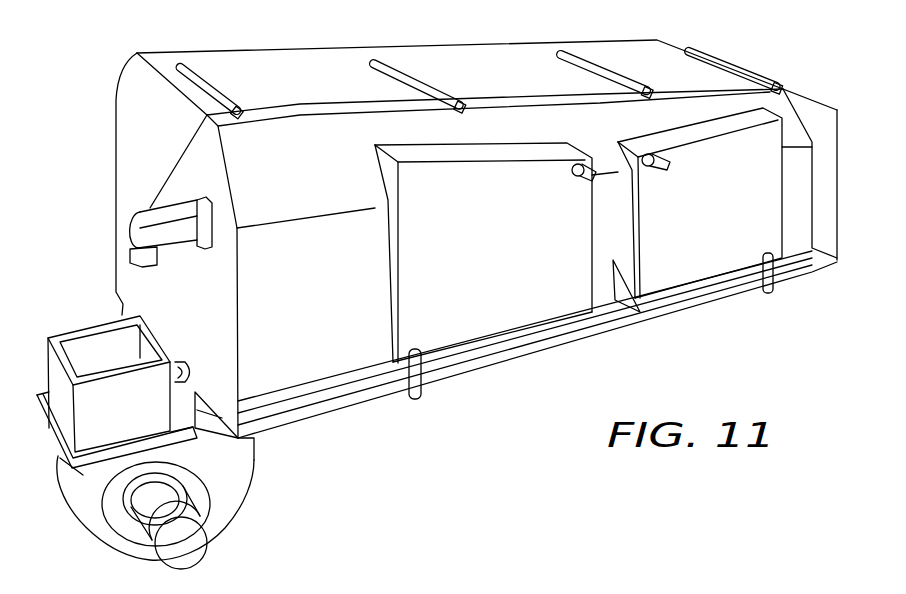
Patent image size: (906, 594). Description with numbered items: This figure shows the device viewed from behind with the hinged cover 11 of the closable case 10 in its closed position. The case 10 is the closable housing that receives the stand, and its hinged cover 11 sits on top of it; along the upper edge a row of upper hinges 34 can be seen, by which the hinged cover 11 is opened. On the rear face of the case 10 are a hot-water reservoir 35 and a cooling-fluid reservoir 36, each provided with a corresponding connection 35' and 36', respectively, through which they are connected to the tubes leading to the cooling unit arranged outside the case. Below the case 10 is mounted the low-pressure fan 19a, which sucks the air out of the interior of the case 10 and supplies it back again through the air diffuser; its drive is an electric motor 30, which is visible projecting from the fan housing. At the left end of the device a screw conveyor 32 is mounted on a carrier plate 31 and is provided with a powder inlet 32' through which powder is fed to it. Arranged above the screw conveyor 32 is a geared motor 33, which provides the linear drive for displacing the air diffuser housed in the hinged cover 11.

The closable case 10 is at (303, 347).
The hinged cover 11 is at (502, 67).
The low-pressure fan 19a is at (223, 485).
The electric motor 30 is at (190, 542).
The carrier plate 31 is at (48, 432).
The screw conveyor 32 is at (109, 369).
The powder inlet 32' is at (193, 342).
The geared motor 33 is at (133, 230).
The upper hinges 34 is at (245, 108).
The hot-water reservoir 35 is at (700, 231).
The connection of hot-water reservoir 35' is at (729, 250).
The cooling-fluid reservoir 36 is at (483, 273).
The connection of cooling-fluid reservoir 36' is at (502, 304).